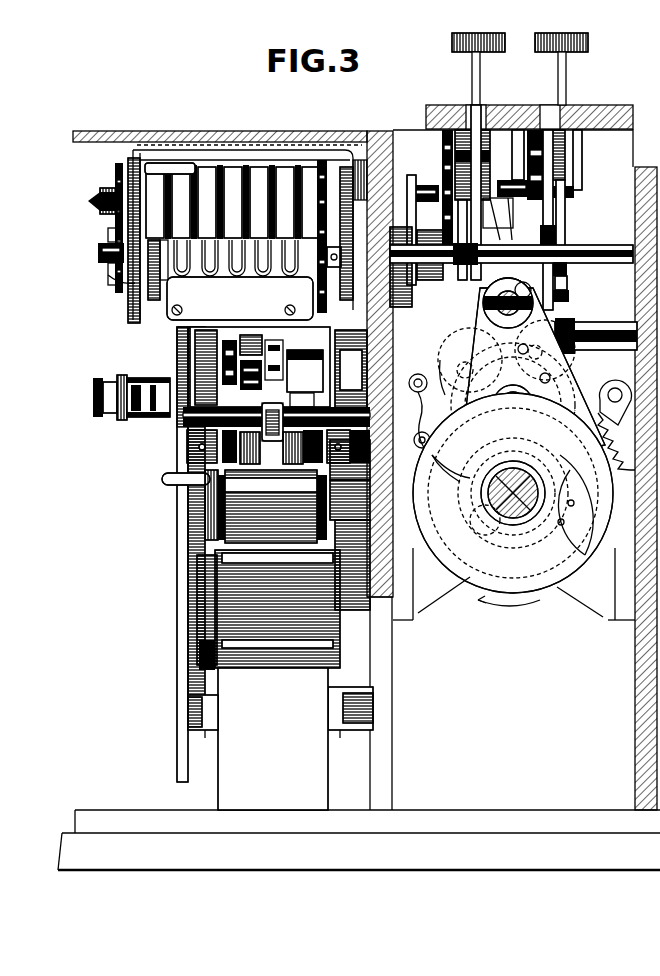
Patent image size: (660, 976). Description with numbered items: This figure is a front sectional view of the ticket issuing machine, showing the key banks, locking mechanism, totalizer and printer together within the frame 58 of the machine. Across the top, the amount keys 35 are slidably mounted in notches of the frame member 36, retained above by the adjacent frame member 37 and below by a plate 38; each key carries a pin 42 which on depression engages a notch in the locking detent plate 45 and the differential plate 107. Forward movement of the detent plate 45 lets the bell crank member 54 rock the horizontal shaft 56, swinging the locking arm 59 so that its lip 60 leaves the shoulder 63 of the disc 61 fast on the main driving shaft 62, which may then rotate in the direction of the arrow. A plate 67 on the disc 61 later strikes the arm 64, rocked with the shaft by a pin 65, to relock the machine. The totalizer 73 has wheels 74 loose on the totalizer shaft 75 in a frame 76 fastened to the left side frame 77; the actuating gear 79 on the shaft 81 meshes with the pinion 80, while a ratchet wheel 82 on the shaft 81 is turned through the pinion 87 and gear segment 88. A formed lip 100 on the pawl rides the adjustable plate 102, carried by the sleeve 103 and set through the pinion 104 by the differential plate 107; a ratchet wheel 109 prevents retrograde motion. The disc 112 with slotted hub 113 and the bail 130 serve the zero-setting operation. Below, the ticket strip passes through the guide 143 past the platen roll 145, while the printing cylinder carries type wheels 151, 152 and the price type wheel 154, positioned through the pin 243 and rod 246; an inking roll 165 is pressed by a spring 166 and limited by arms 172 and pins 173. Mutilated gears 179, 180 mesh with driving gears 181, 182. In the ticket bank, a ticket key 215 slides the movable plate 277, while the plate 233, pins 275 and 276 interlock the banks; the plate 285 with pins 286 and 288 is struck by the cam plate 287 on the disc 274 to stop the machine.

The amount keys 35 is at (589, 44).
The frame member 36 is at (595, 106).
The adjacent frame member 37 is at (488, 126).
The plate 38 is at (556, 230).
The pin 42 is at (458, 130).
The locking detent plate 45 is at (575, 138).
The bell crank member 54 is at (538, 205).
The horizontal shaft 56 is at (524, 314).
The side frame 58 is at (636, 646).
The locking arm 59 is at (468, 332).
The lip 60 is at (488, 505).
The disc 61 is at (478, 560).
The main driving shaft 62 is at (505, 525).
The shoulder 63 is at (490, 512).
The arm 64 is at (620, 440).
The pin 65 is at (570, 302).
The plate 67 is at (576, 516).
The totalizer 73 is at (152, 157).
The totalizer wheels 74 is at (258, 160).
The totalizer shaft 75 is at (90, 203).
The totalizer frame 76 is at (126, 284).
The left side frame 77 is at (378, 705).
The actuating gear 79 is at (306, 296).
The pinion 80 is at (322, 160).
The shaft 81 is at (588, 252).
The ratchet wheel 82 is at (410, 200).
The pinion 87 is at (404, 233).
The gear segment 88 is at (424, 394).
The formed lip 100 is at (360, 327).
The adjustable plate 102 is at (445, 192).
The sleeve 103 is at (496, 190).
The pinion 104 is at (568, 272).
The differential plate 107 is at (560, 190).
The ratchet wheel 109 is at (350, 160).
The disc 112 is at (116, 165).
The slotted hub 113 is at (112, 190).
The bail 130 is at (168, 163).
The guide 143 is at (238, 790).
The platen roll 145 is at (290, 668).
The type wheel 151 is at (172, 366).
The type wheels 152 is at (230, 335).
The type wheel 154 is at (290, 348).
The inking roll 165 is at (222, 530).
The spring 166 is at (255, 468).
The arms 172 is at (308, 468).
The pins 173 is at (372, 515).
The mutilated gear 179 is at (200, 648).
The mutilated gear 180 is at (170, 327).
The mutilated driving gear 181 is at (185, 492).
The mutilated driving gear 182 is at (195, 510).
The ticket key 215 is at (452, 44).
The plate 233 is at (445, 132).
The pin 243 is at (568, 289).
The rod 246 is at (610, 378).
The disc 274 is at (470, 585).
The pin 275 is at (534, 168).
The pin 276 is at (565, 194).
The movable plate 277 is at (478, 108).
The plate 285 is at (505, 443).
The pin 286 is at (459, 468).
The cam plate 287 is at (555, 444).
The pin 288 is at (455, 372).